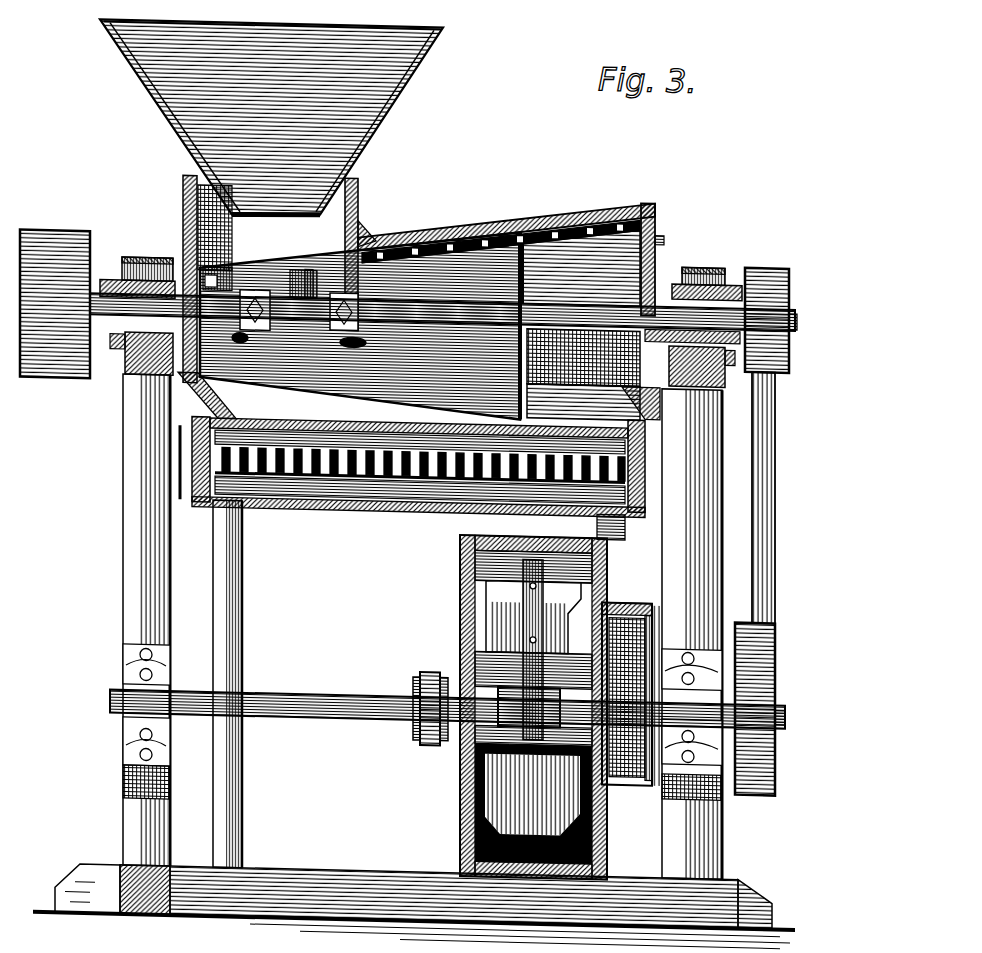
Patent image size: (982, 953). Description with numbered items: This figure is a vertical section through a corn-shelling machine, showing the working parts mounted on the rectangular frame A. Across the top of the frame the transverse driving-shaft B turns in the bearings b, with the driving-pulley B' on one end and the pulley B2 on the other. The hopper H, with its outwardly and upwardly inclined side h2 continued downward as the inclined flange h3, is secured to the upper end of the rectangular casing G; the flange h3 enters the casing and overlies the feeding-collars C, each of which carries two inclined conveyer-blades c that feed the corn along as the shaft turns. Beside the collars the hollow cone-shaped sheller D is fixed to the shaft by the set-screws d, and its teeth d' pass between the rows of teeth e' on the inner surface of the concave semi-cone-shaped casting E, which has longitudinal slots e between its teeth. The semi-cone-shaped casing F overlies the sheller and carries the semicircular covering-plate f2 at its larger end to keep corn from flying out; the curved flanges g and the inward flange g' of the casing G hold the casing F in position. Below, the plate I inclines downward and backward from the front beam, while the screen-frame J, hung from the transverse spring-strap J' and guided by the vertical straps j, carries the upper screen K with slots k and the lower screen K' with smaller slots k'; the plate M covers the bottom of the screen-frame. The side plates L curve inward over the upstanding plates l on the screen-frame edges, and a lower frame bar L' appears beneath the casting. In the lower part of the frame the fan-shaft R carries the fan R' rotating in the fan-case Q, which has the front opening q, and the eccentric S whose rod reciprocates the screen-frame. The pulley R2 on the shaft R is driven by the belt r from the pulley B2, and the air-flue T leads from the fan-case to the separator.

The hopper H is at (271, 119).
The inclined hopper side h2 is at (272, 43).
The inclined flange h3 is at (183, 178).
The rectangular casing G is at (358, 201).
The inward flange g' is at (386, 225).
The curved side flanges g is at (304, 265).
The driving-shaft B is at (501, 267).
The feeding-collars C is at (200, 266).
The conveyer-blades c is at (330, 268).
The set-screws d is at (536, 270).
The longitudinal slots e is at (259, 375).
The casting teeth e' is at (338, 378).
The corn-sheller D is at (466, 230).
The sheller teeth d' is at (500, 223).
The concave semi-cone-shaped casting E is at (600, 199).
The semi-cone-shaped casing F is at (601, 256).
The semicircular covering-plate f2 is at (664, 225).
The driving-pulley B' is at (55, 319).
The pulley B2 is at (782, 321).
The bearings b is at (127, 262).
The side plates L is at (417, 366).
The upstanding plates l is at (419, 402).
The inclined plate I is at (583, 358).
The lower frame bar L' is at (583, 402).
The upper screen K is at (371, 459).
The lower screen K' is at (419, 480).
The bottom plate M is at (400, 502).
The upper screen slots k is at (420, 494).
The lower screen slots k' is at (420, 522).
The screen-frame J is at (269, 685).
The transverse spring-strap J' is at (189, 479).
The front vertical straps j is at (243, 605).
The frame A is at (402, 626).
The fan-shaft R is at (447, 694).
The eccentric S is at (410, 720).
The fan-shaft pulley R2 is at (776, 732).
The belt r is at (772, 498).
The fan-case Q is at (460, 790).
The fan R' is at (516, 649).
The front opening q is at (475, 840).
The air-flue T is at (622, 592).